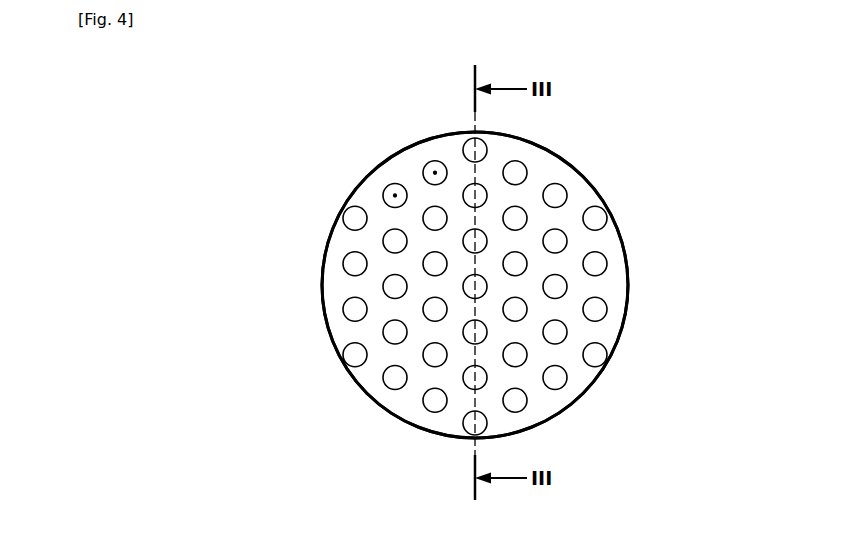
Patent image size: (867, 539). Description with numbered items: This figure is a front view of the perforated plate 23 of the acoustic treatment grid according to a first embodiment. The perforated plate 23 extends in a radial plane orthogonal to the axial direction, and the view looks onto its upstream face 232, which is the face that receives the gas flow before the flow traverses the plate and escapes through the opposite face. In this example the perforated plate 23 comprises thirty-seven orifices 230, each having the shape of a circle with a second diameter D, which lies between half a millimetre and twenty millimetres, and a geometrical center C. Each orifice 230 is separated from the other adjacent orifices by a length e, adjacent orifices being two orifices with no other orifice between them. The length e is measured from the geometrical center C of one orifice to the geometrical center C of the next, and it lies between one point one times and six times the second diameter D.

The perforated plate 23 is at (594, 185).
The orifices 230 is at (596, 264).
The upstream face 232 is at (579, 370).
The geometrical center C is at (393, 194).
The second diameter D is at (346, 343).
The length e is at (435, 173).